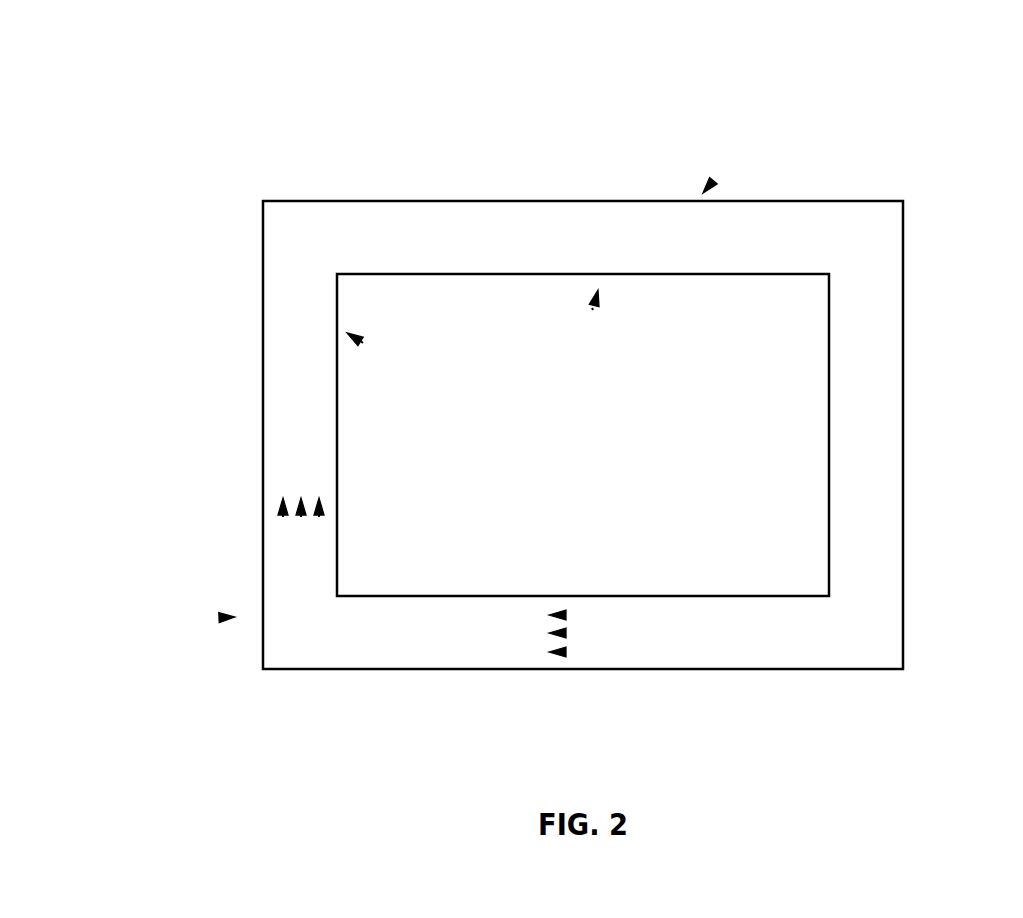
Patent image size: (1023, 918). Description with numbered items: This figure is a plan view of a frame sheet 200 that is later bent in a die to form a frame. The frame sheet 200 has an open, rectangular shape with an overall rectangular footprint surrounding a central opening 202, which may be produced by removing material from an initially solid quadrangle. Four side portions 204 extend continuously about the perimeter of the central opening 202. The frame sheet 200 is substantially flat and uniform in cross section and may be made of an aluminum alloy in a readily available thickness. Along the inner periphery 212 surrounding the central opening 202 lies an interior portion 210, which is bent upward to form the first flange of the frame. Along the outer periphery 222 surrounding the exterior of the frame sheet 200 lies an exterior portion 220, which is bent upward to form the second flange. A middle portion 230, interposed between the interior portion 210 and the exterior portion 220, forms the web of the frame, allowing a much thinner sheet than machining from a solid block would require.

The frame sheet 200 is at (569, 390).
The central opening 202 is at (716, 383).
The side portions 204 is at (595, 219).
The interior portion 210 is at (319, 517).
The periphery 212 is at (358, 341).
The exterior portion 220 is at (283, 517).
The periphery 222 is at (712, 181).
The middle portion 230 is at (301, 517).